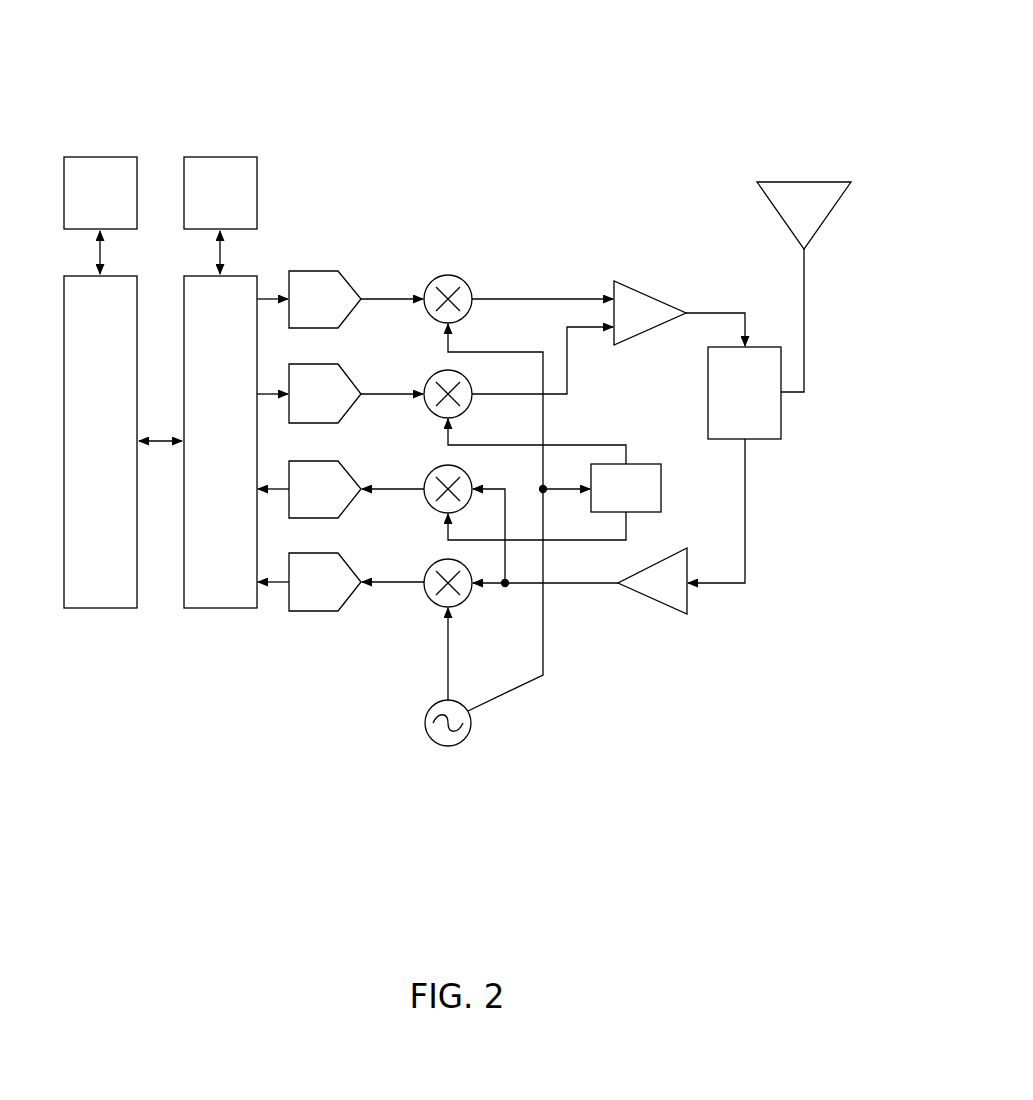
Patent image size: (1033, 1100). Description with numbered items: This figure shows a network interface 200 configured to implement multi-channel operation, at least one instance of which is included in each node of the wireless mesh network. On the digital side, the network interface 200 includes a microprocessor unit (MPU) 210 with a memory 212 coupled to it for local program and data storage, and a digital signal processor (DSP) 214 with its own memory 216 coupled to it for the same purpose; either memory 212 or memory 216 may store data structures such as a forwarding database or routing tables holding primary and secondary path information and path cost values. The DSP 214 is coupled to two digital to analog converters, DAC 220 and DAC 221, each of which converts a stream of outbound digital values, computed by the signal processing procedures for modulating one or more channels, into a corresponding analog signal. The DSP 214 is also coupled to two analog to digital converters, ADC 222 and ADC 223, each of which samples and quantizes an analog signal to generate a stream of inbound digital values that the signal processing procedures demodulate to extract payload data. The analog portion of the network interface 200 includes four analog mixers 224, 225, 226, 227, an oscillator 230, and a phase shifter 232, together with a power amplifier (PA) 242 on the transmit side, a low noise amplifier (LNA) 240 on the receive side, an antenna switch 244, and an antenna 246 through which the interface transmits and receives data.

The network interface 200 is at (601, 111).
The microprocessor unit 210 is at (83, 464).
The memory 212 is at (83, 216).
The digital signal processor 214 is at (203, 464).
The memory 216 is at (203, 216).
The digital to analog converter 220 is at (298, 322).
The digital to analog converter 221 is at (298, 417).
The analog to digital converter 222 is at (298, 511).
The analog to digital converter 223 is at (298, 606).
The analog mixer 224 is at (441, 277).
The analog mixer 225 is at (441, 373).
The analog mixer 226 is at (441, 469).
The analog mixer 227 is at (441, 561).
The oscillator 230 is at (428, 706).
The phase shifter 232 is at (608, 500).
The low noise amplifier 240 is at (652, 600).
The power amplifier 242 is at (632, 284).
The antenna switch 244 is at (727, 404).
The antenna 246 is at (776, 210).